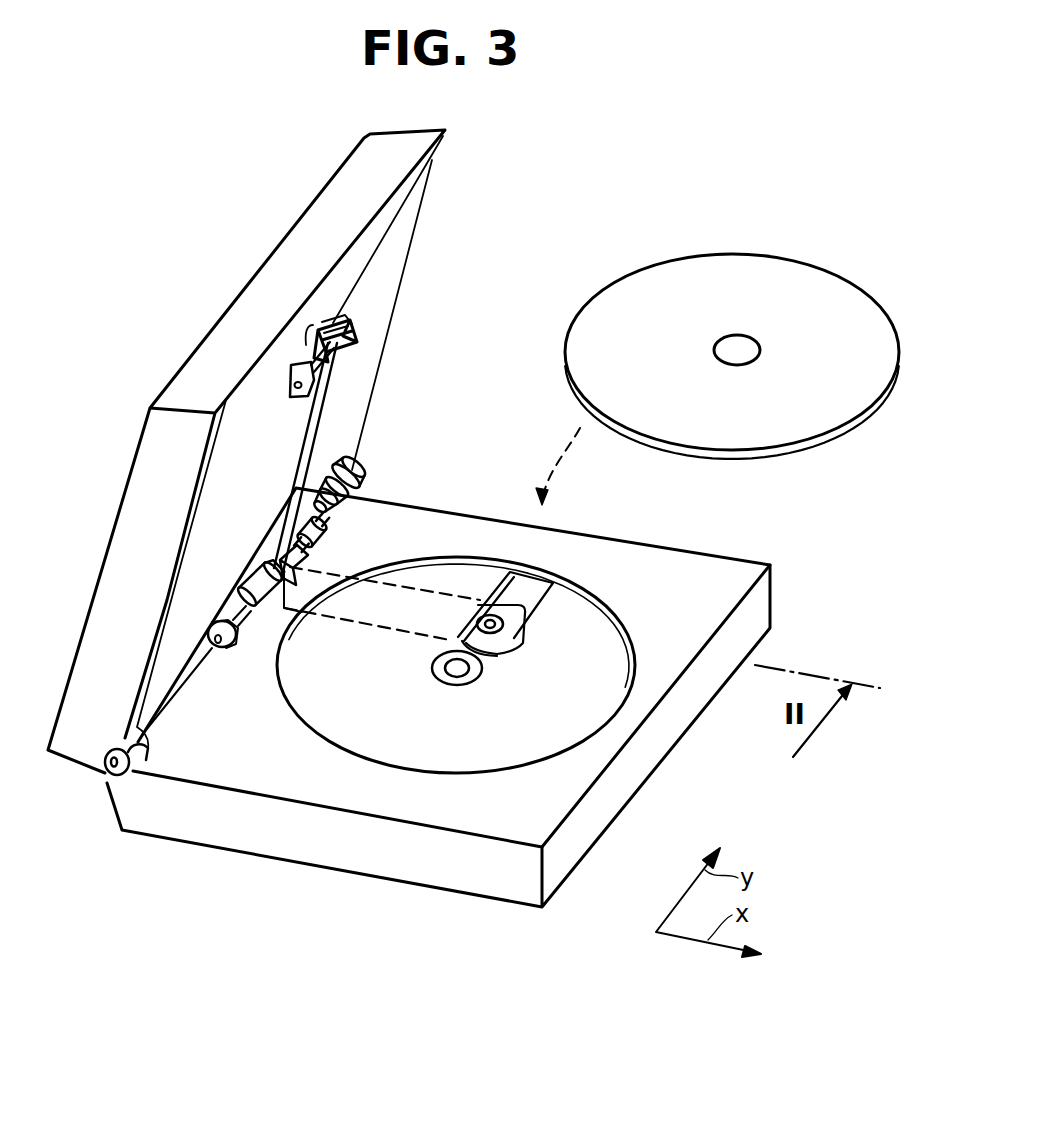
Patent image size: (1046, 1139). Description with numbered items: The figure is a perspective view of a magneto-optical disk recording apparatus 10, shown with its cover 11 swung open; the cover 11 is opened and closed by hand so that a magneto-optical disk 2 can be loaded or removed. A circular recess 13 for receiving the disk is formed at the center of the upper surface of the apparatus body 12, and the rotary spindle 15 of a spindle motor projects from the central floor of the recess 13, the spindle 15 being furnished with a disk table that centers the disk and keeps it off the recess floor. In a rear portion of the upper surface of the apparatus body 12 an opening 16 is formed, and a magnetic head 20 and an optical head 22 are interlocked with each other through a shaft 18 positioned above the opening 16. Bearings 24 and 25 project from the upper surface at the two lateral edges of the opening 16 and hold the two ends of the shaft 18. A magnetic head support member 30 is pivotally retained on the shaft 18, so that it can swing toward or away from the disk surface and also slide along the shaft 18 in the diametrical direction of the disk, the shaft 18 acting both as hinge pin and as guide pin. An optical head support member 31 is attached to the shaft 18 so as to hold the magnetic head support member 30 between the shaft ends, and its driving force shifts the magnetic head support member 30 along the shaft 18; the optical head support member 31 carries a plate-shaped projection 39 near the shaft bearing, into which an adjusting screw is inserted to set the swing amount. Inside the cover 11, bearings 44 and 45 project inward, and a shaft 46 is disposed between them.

The magneto-optical disk 2 is at (840, 292).
The magneto-optical disk recording apparatus 10 is at (797, 815).
The cover 11 is at (248, 300).
The apparatus body 12 is at (662, 740).
The circular recess 13 is at (610, 633).
The rotary spindle 15 is at (459, 673).
The opening 16 is at (326, 539).
The shaft 18 is at (240, 600).
The magnetic head 20 is at (360, 350).
The optical head 22 is at (505, 630).
The bearing 24 is at (232, 650).
The bearing 25 is at (360, 496).
The magnetic head support member 30 is at (304, 463).
The optical head support member 31 is at (420, 624).
The plate-shaped projection 39 is at (303, 575).
The bearing 44 is at (315, 388).
The bearing 45 is at (345, 340).
The shaft 46 is at (352, 320).